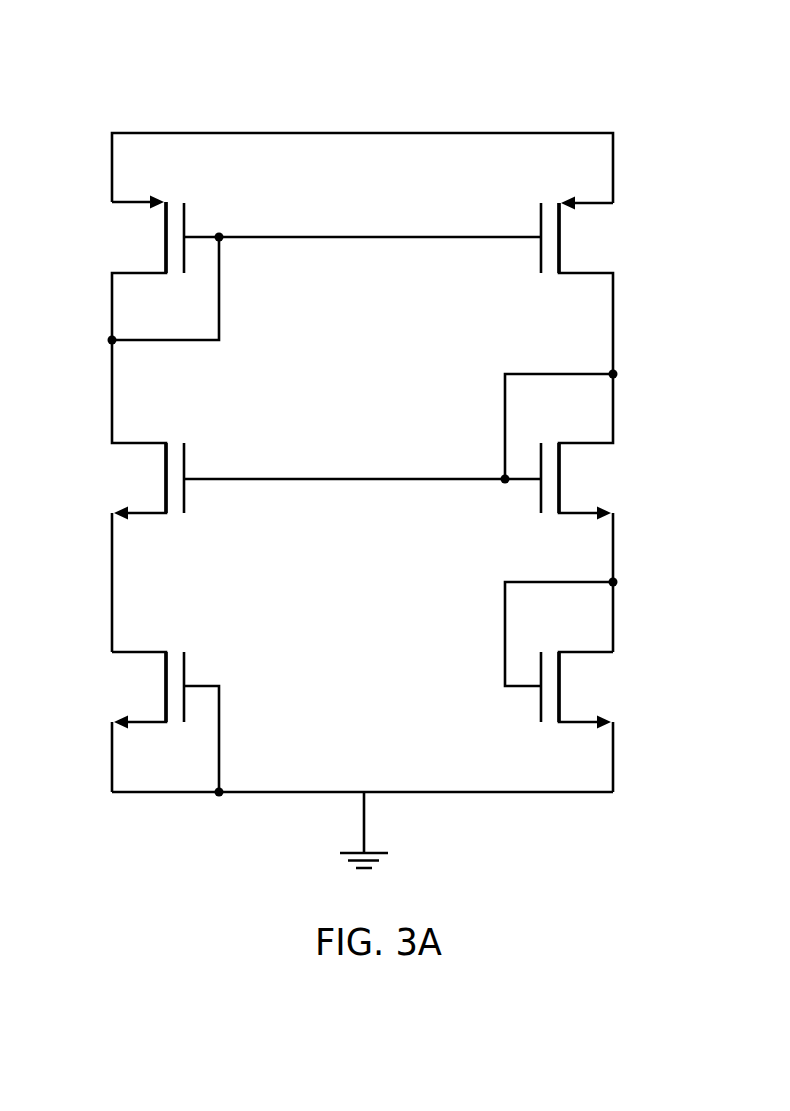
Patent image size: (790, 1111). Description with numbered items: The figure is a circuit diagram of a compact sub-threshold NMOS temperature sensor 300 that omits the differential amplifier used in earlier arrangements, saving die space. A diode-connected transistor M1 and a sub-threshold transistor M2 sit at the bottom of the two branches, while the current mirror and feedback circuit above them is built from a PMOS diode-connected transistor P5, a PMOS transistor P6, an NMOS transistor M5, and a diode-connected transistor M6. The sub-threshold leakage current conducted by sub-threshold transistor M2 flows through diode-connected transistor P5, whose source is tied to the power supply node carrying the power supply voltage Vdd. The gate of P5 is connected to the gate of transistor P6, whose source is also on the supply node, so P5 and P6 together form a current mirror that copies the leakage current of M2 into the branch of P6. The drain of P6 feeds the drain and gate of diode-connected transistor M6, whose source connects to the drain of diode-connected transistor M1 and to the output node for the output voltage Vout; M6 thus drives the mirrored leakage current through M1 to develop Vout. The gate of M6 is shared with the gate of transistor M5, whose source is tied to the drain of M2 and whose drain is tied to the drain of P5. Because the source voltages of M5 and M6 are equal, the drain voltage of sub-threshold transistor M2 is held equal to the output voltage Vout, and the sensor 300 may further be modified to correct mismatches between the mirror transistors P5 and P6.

The sub-threshold NMOS temperature sensor 300 is at (407, 36).
The PMOS diode-connected transistor P5 is at (149, 270).
The PMOS transistor P6 is at (433, 338).
The NMOS transistor M5 is at (306, 496).
The diode-connected transistor M6 is at (596, 513).
The sub-threshold transistor M2 is at (148, 724).
The diode-connected transistor M1 is at (596, 722).
The power supply voltage Vdd is at (363, 112).
The output voltage Vout is at (587, 627).